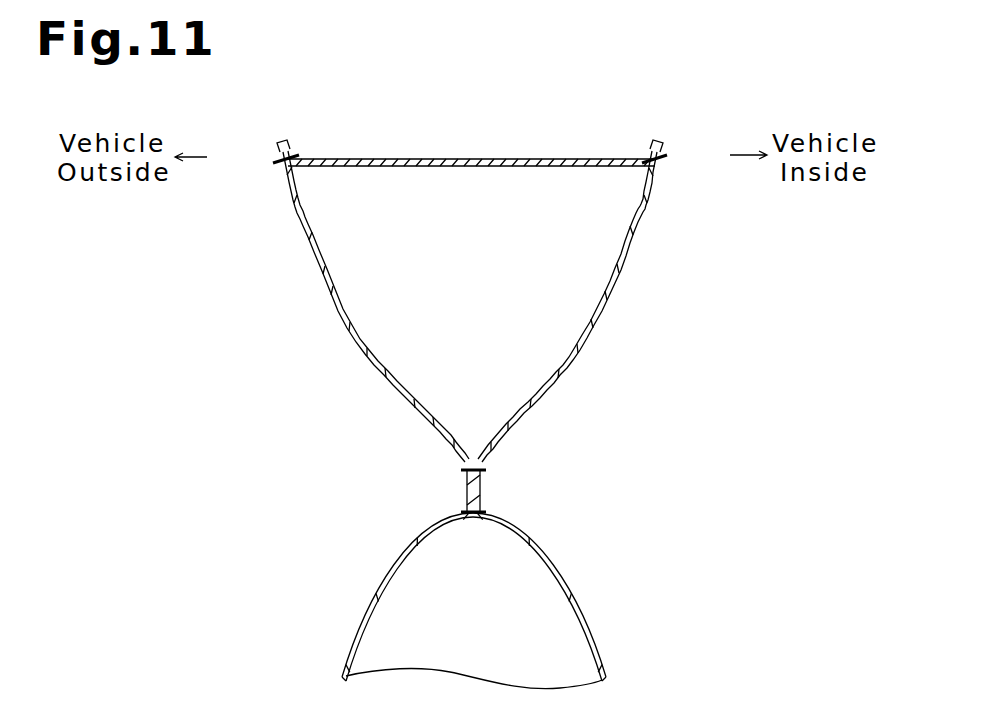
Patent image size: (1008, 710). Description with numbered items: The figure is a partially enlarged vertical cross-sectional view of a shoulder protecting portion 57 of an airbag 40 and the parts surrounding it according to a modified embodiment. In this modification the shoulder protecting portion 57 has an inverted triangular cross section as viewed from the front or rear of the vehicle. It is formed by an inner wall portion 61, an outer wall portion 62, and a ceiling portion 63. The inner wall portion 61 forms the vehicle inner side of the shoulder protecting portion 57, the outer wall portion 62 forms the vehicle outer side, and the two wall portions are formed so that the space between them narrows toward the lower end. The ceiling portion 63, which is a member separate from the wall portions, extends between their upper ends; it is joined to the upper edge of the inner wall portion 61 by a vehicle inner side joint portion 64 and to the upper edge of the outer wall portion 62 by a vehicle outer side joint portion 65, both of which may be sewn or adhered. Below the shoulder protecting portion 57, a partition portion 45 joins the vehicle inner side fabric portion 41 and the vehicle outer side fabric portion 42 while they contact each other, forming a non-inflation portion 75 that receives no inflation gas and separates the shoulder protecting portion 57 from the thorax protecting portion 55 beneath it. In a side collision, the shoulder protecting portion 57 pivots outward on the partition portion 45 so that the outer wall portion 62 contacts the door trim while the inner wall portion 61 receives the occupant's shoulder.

The airbag 40 is at (693, 442).
The fabric portion 41 is at (598, 636).
The fabric portion 42 is at (350, 636).
The upper partition portion 45 is at (656, 505).
The thorax protecting portion 55 is at (476, 618).
The shoulder protecting portion 57 is at (474, 256).
The inner wall portion 61 is at (615, 283).
The outer wall portion 62 is at (326, 285).
The ceiling portion 63 is at (565, 158).
The vehicle inner side joint portion 64 is at (652, 159).
The vehicle outer side joint portion 65 is at (288, 159).
The non-inflation portion 75 is at (464, 488).